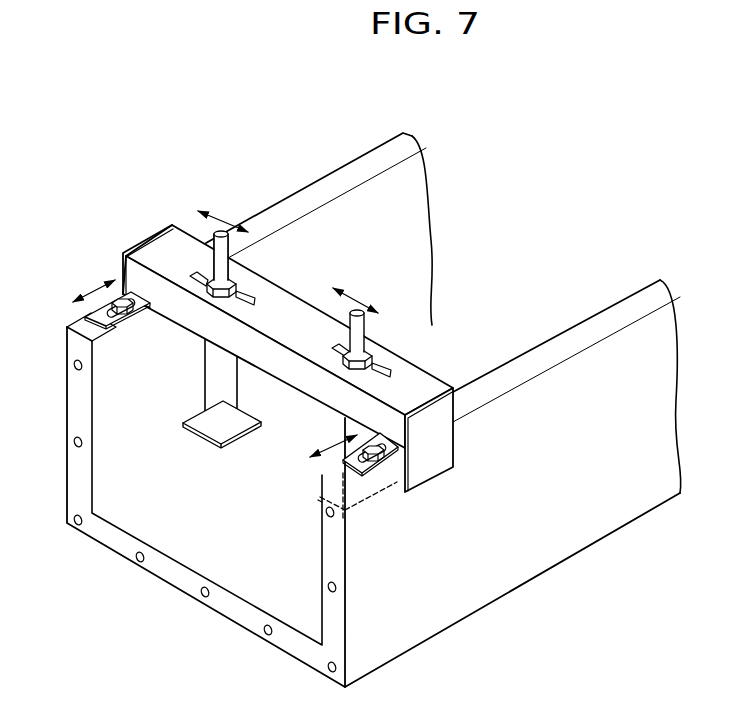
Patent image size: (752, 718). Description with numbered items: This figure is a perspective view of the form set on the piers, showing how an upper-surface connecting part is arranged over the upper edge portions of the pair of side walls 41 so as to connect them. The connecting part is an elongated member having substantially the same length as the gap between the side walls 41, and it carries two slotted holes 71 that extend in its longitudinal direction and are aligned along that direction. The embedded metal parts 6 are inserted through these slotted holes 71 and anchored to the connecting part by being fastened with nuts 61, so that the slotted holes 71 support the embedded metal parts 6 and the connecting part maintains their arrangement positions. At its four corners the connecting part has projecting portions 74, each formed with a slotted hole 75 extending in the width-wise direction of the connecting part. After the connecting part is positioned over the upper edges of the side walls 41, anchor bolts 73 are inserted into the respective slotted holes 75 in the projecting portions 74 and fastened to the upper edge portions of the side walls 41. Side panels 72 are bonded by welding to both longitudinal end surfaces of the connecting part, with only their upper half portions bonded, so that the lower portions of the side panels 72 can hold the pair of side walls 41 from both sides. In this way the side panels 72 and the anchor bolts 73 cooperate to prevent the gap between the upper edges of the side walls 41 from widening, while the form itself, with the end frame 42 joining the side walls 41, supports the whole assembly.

The embedded metal part 6 is at (200, 223).
The side wall 41 is at (330, 187).
The end frame 42 is at (175, 578).
The nut 61 is at (232, 272).
The slotted hole 71 is at (196, 272).
The side panel 72 is at (143, 247).
The anchor bolt 73 is at (123, 297).
The projecting portion 74 is at (97, 310).
The slotted hole 75 is at (117, 312).